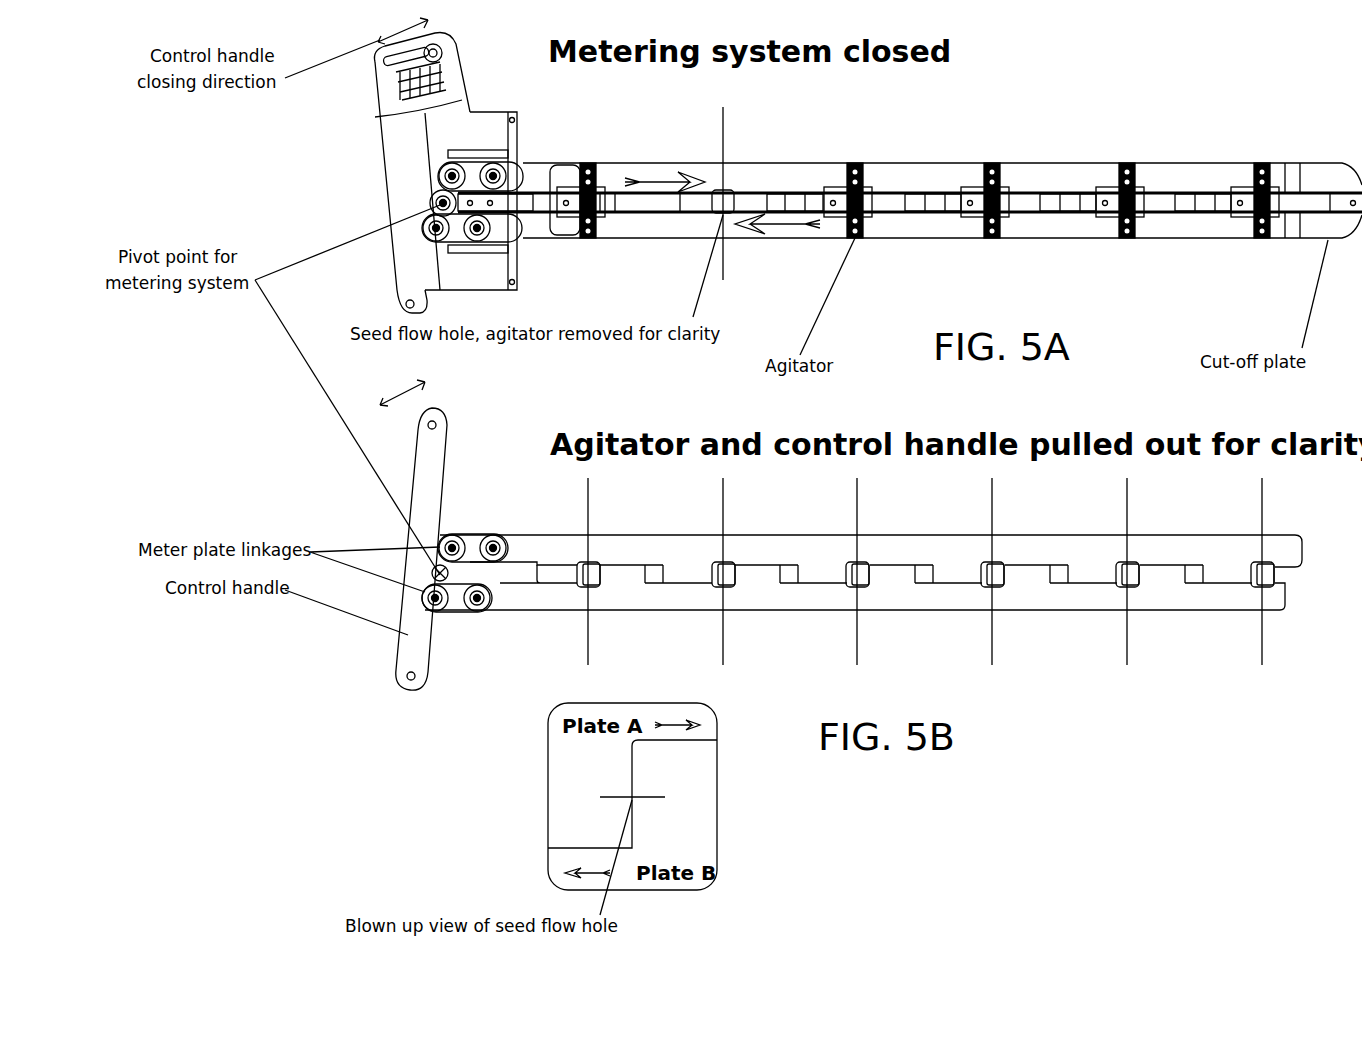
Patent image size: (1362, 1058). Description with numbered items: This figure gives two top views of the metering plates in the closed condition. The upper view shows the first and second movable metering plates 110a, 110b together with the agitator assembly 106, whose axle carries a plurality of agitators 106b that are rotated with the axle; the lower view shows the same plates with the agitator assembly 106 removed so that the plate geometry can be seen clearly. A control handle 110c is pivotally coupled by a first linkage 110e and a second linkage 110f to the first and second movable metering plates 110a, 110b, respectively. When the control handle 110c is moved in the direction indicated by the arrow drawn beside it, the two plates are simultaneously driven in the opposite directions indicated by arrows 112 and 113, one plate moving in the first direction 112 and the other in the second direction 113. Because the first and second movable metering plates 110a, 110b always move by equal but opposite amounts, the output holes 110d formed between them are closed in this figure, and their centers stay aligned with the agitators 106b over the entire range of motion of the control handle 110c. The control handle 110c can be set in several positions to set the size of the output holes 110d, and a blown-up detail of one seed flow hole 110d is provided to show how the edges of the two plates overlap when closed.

In FIG. 5A, the agitator assembly 106 is at (1245, 188).
In FIG. 5A, the agitators 106b is at (588, 162).
In FIG. 5A, the first movable metering plate 110a is at (1048, 232).
In FIG. 5B, the first movable metering plate 110a is at (968, 598).
In FIG. 5A, the second movable metering plate 110b is at (968, 160).
In FIG. 5B, the second movable metering plate 110b is at (975, 540).
In FIG. 5A, the control handle 110c is at (465, 117).
In FIG. 5B, the control handle 110c is at (452, 460).
In FIG. 5A, the output holes 110d is at (735, 188).
In FIG. 5B, the output holes 110d is at (602, 575).
In FIG. 5B, the first linkage 110e is at (458, 607).
In FIG. 5B, the second linkage 110f is at (475, 545).
In FIG. 5A, the arrow indicating first direction 112 is at (700, 178).
In FIG. 5A, the arrow indicating second direction 113 is at (778, 228).